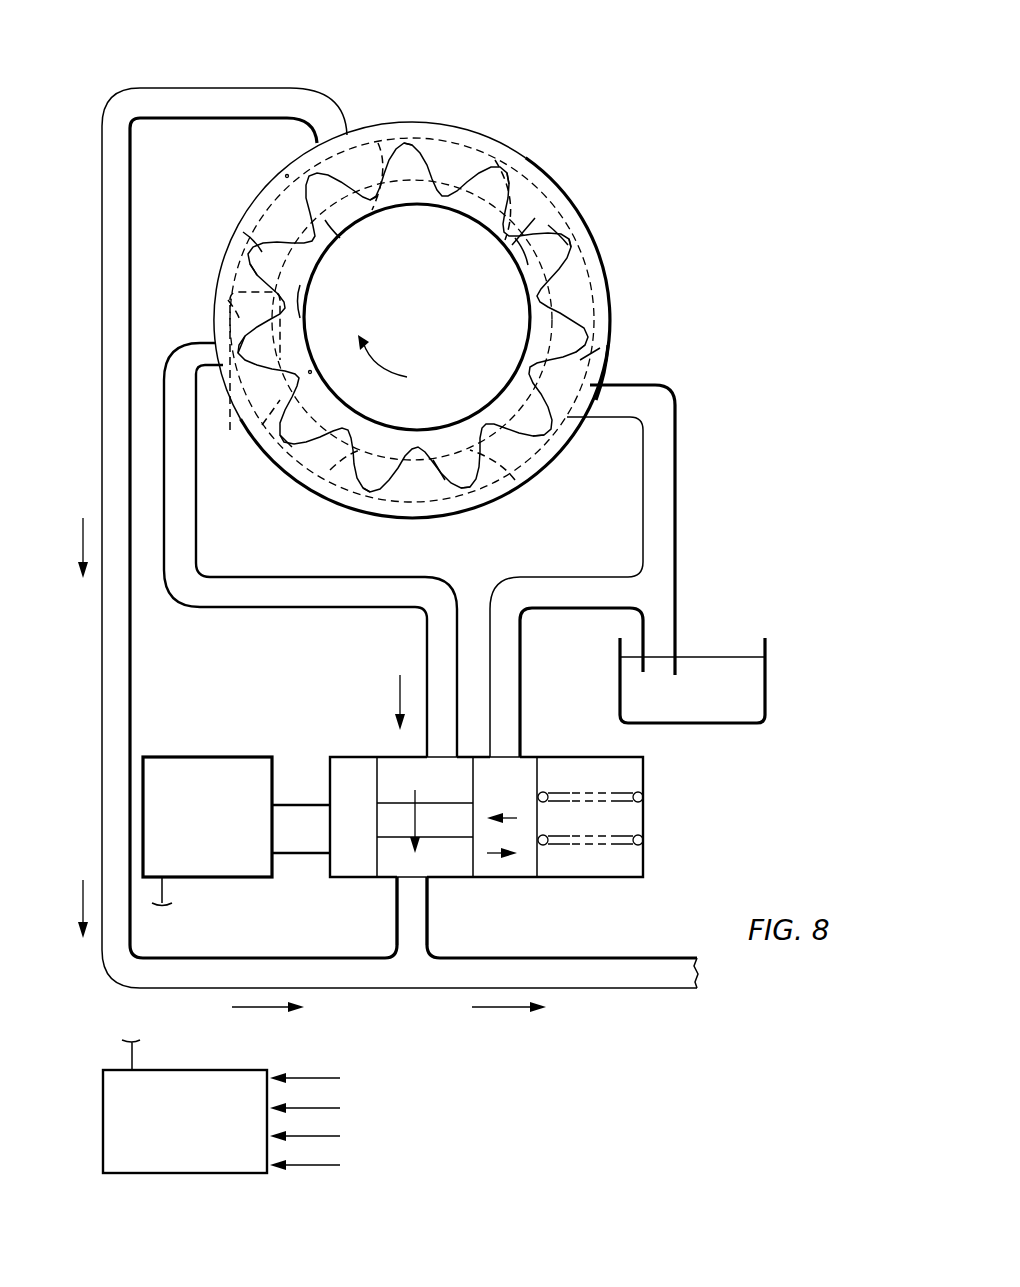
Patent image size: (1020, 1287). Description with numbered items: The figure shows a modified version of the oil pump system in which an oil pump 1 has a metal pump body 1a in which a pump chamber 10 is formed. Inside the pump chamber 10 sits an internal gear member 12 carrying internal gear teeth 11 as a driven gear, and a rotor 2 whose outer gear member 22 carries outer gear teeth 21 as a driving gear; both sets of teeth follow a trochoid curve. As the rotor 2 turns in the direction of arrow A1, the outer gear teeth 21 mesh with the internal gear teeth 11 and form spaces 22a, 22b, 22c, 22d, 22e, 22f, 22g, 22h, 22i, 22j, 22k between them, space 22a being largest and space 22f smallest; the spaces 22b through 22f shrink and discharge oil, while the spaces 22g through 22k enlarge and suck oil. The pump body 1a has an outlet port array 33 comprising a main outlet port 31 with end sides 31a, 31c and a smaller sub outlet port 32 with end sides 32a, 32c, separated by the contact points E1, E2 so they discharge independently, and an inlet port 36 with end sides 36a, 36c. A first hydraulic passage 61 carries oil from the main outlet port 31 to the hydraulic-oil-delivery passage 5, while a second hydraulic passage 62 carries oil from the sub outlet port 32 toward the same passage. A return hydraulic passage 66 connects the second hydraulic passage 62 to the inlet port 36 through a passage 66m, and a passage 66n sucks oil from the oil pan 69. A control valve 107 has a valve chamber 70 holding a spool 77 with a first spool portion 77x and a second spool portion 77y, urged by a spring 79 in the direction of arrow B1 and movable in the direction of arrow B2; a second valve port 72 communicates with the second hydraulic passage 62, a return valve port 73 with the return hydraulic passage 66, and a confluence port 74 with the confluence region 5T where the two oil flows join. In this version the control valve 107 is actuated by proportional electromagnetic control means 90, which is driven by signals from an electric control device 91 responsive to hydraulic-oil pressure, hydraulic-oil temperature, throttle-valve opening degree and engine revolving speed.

The oil pump 1 is at (605, 275).
The pump body 1a is at (610, 332).
The rotor 2 is at (525, 215).
The hydraulic-oil-delivery passage 5 is at (620, 988).
The confluence region 5T is at (427, 952).
The pump chamber 10 is at (248, 235).
The internal gear teeth 11 is at (258, 248).
The internal gear member 12 is at (243, 232).
The outer gear teeth 21 is at (535, 218).
The outer gear member 22 is at (548, 225).
The space 22a is at (287, 445).
The space 22b is at (240, 360).
The space 22c is at (255, 250).
The space 22d is at (378, 200).
The space 22e is at (410, 143).
The space 22f is at (518, 160).
The space 22g is at (570, 242).
The space 22h is at (560, 353).
The space 22i is at (540, 427).
The space 22j is at (465, 452).
The space 22k is at (370, 490).
The main outlet port 31 is at (378, 143).
The end side 31a is at (495, 160).
The end side 31c is at (340, 238).
The sub outlet port 32 is at (225, 325).
The end side 32a is at (262, 425).
The end side 32c is at (300, 318).
The outlet port array 33 is at (228, 300).
The inlet port 36 is at (515, 480).
The end side 36a is at (330, 470).
The end side 36c is at (515, 238).
The first hydraulic passage 61 is at (102, 636).
The second hydraulic passage 62 is at (210, 607).
The return hydraulic passage 66 is at (568, 592).
The passage 66m is at (676, 472).
The passage 66n is at (676, 630).
The oil pan 69 is at (718, 727).
The valve chamber 70 is at (567, 873).
The second valve port 72 is at (430, 756).
The return valve port 73 is at (507, 755).
The confluence port 74 is at (407, 888).
The spool 77 is at (358, 872).
The first spool portion 77x is at (340, 878).
The second spool portion 77y is at (532, 875).
The spring 79 is at (645, 840).
The proportional electromagnetic control means 90 is at (225, 748).
The electric control device 91 is at (198, 1136).
The control valve 107 is at (302, 885).
The rotary direction of the rotor A1 is at (385, 362).
The spring urging direction B1 is at (508, 814).
The spool movement direction B2 is at (498, 878).
The contact point E1 is at (287, 175).
The contact point E2 is at (310, 372).